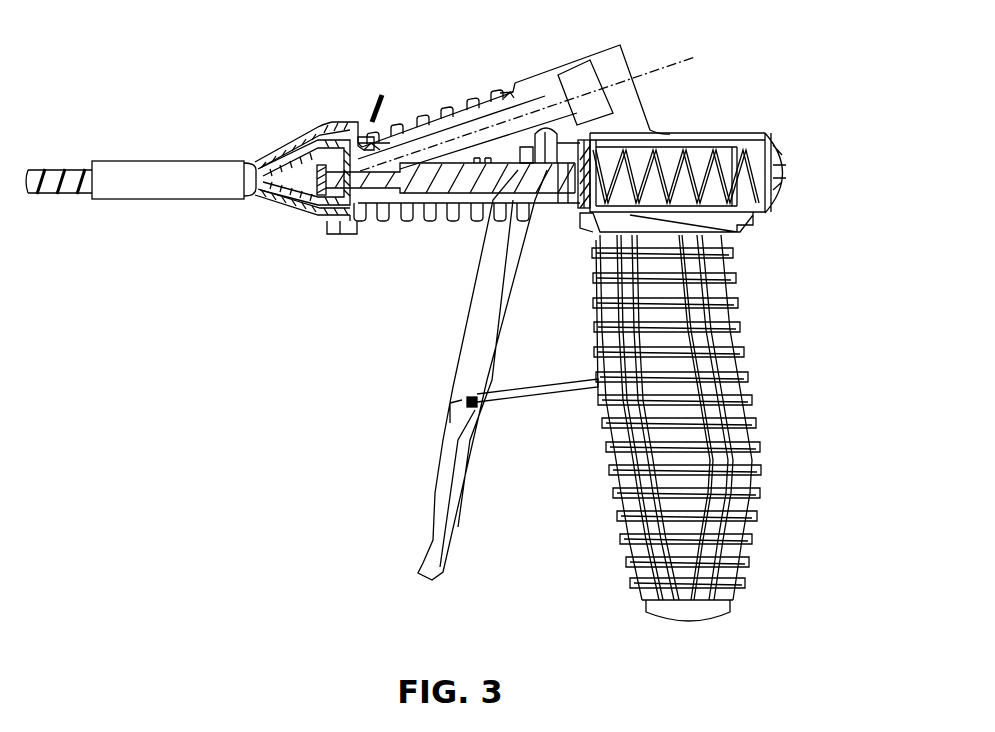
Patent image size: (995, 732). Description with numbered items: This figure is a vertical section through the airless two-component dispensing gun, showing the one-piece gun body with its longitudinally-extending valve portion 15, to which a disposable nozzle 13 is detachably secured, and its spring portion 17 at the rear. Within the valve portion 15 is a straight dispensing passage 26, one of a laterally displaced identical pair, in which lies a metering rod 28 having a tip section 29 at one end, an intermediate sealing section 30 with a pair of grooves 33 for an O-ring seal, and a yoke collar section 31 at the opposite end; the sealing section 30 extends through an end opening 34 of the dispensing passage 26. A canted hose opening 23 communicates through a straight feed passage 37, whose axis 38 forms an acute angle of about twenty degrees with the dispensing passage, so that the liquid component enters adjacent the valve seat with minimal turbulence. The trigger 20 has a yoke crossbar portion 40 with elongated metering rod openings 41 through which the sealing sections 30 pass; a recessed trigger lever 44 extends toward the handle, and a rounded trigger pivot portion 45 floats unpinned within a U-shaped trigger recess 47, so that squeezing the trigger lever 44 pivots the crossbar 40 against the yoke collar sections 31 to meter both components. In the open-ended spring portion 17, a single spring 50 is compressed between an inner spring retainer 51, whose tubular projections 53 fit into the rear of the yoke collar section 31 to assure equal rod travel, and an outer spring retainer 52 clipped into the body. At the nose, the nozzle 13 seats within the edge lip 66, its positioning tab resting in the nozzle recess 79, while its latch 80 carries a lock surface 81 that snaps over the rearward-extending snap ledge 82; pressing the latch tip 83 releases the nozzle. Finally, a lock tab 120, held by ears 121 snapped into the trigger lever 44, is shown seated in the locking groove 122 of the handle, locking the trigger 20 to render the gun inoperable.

The disposable nozzle 13 is at (175, 198).
The valve portion 15 is at (403, 260).
The spring portion 17 is at (740, 230).
The trigger 20 is at (432, 453).
The hose opening 23 is at (620, 45).
The dispensing passage 26 is at (397, 210).
The metering rod 28 is at (453, 210).
The tip section 29 is at (310, 212).
The intermediate sealing section 30 is at (477, 163).
The yoke collar section 31 is at (560, 200).
The grooves 33 is at (487, 163).
The end opening 34 is at (505, 193).
The feed passage 37 is at (533, 100).
The axis 38 is at (672, 52).
The yoke crossbar portion 40 is at (637, 147).
The metering rod openings 41 is at (565, 135).
The trigger lever 44 is at (460, 527).
The trigger pivot portion 45 is at (560, 122).
The trigger recess 47 is at (545, 118).
The spring 50 is at (670, 145).
The inner spring retainer 51 is at (598, 212).
The outer spring retainer 52 is at (780, 143).
The tubular projections 53 is at (580, 193).
The edge lip 66 is at (320, 130).
The nozzle recess 79 is at (340, 233).
The latch 80 is at (312, 137).
The lock surface 81 is at (362, 130).
The snap ledge 82 is at (372, 133).
The latch tip 83 is at (382, 95).
The lock tab 120 is at (513, 405).
The ears 121 is at (467, 400).
The locking groove 122 is at (605, 385).